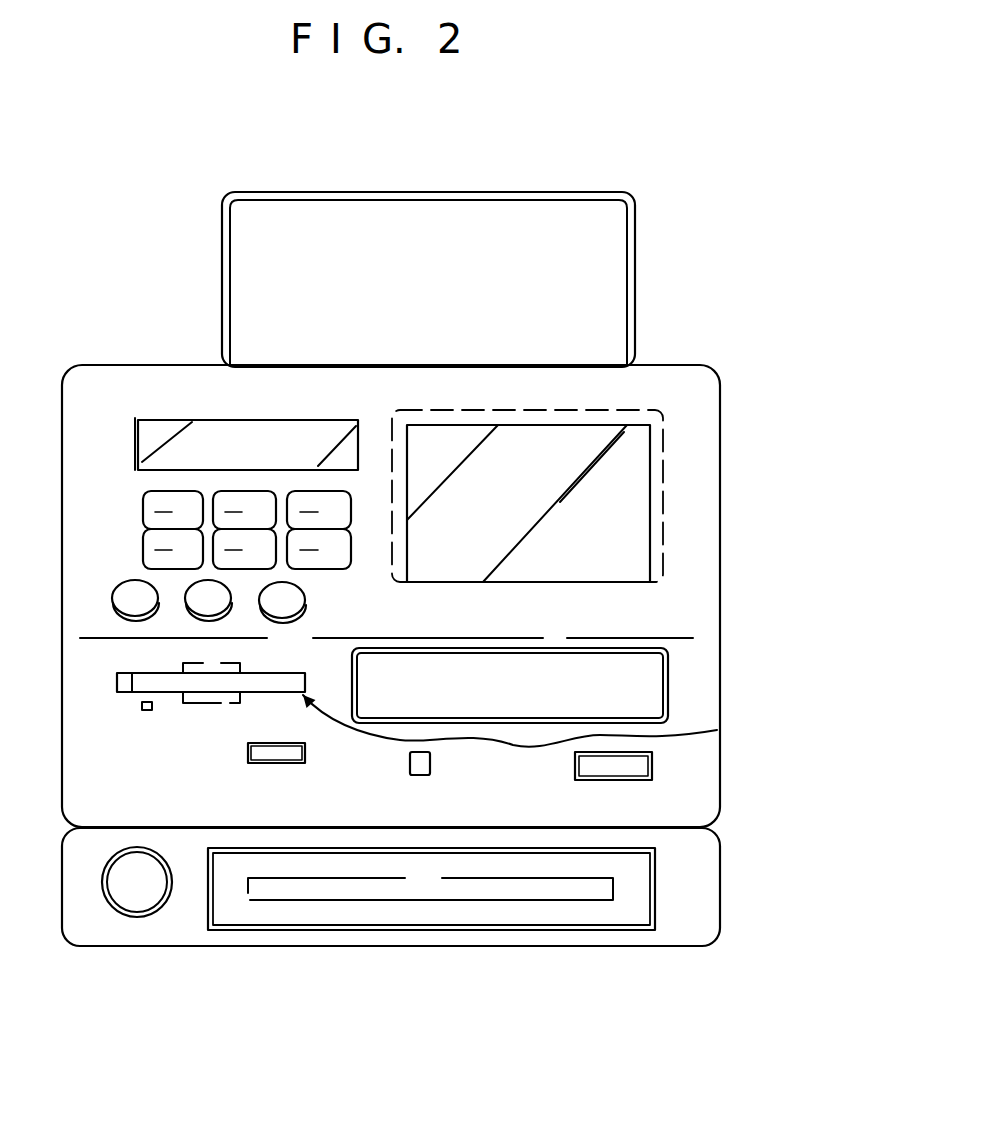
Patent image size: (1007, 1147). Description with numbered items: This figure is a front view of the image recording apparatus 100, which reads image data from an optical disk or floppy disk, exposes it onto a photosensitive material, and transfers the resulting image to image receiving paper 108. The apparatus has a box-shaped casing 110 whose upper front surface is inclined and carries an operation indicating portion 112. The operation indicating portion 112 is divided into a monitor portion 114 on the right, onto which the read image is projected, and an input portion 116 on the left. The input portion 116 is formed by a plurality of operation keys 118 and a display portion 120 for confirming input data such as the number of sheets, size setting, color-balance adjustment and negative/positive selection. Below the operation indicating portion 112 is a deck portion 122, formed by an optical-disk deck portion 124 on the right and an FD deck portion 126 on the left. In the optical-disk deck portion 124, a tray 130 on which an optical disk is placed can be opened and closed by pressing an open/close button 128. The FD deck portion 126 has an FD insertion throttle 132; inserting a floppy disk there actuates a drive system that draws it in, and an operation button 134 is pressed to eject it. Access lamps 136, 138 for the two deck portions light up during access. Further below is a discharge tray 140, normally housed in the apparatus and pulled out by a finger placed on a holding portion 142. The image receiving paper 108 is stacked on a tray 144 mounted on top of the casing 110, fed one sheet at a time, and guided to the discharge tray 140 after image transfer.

The image recording apparatus 100 is at (752, 438).
The image receiving paper 108 is at (598, 224).
The casing 110 is at (705, 590).
The operation indicating portion 112 is at (213, 300).
The monitor portion 114 is at (432, 450).
The input portion 116 is at (122, 423).
The operation keys 118 is at (131, 590).
The display portion 120 is at (130, 446).
The deck portion 122 is at (820, 673).
The optical-disk deck portion 124 is at (672, 698).
The FD deck portion 126 is at (717, 730).
The open/close button 128 is at (607, 777).
The tray 130 is at (653, 672).
The FD insertion throttle 132 is at (128, 690).
The operation button 134 is at (293, 755).
The access lamp 136 is at (423, 767).
The access lamp 138 is at (147, 710).
The discharge tray 140 is at (657, 888).
The holding portion 142 is at (528, 883).
The tray 144 is at (633, 264).